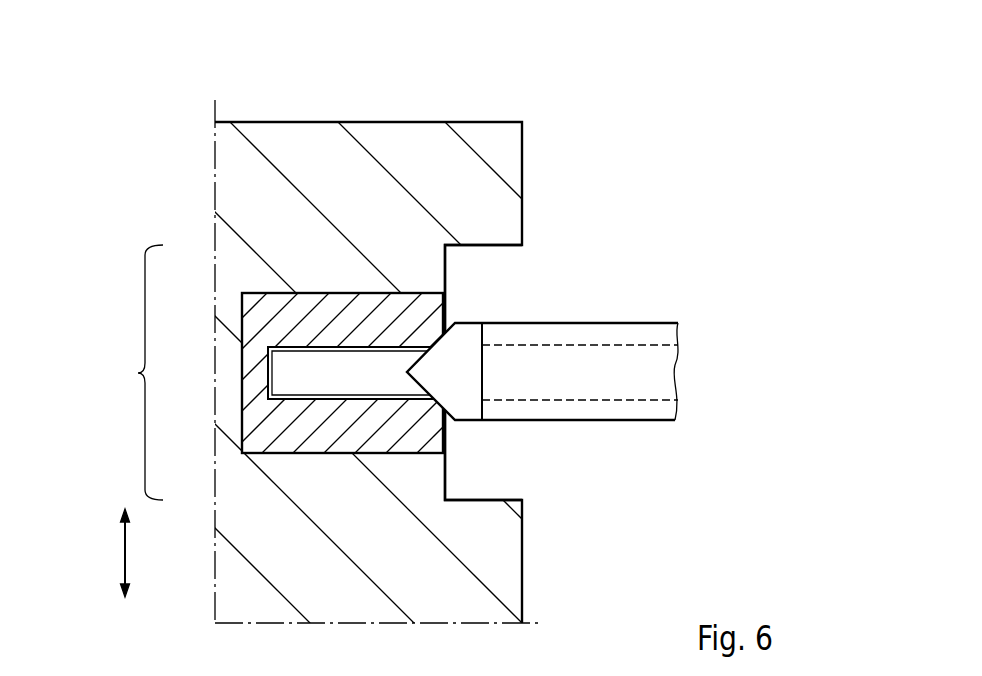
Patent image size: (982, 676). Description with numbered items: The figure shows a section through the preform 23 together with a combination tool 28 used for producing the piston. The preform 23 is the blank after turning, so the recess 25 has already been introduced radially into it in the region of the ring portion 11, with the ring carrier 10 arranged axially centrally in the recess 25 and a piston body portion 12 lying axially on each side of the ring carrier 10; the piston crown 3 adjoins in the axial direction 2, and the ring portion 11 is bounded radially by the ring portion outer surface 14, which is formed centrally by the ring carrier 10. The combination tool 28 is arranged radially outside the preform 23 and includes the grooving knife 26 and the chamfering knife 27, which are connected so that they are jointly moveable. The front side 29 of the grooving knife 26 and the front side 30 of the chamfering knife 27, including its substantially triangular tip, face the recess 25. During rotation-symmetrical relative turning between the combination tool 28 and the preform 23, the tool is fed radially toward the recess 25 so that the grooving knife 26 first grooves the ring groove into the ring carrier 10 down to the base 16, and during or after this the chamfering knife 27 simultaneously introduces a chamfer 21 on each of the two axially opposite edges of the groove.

The axial direction 2 is at (122, 552).
The piston crown 3 is at (388, 122).
The ring carrier 10 is at (330, 282).
The ring portion 11 is at (137, 373).
The piston body portion 12 is at (445, 270).
The ring portion outer surface 14 is at (515, 300).
The base 16 is at (267, 372).
The chamfer 21 is at (442, 340).
The preform 23 is at (708, 166).
The recess 25 is at (542, 273).
The grooving knife 26 is at (374, 338).
The chamfering knife 27 is at (474, 316).
The combination tool 28 is at (709, 366).
The front side of the grooving knife 29 is at (267, 353).
The front side of the chamfering knife 30 is at (420, 387).